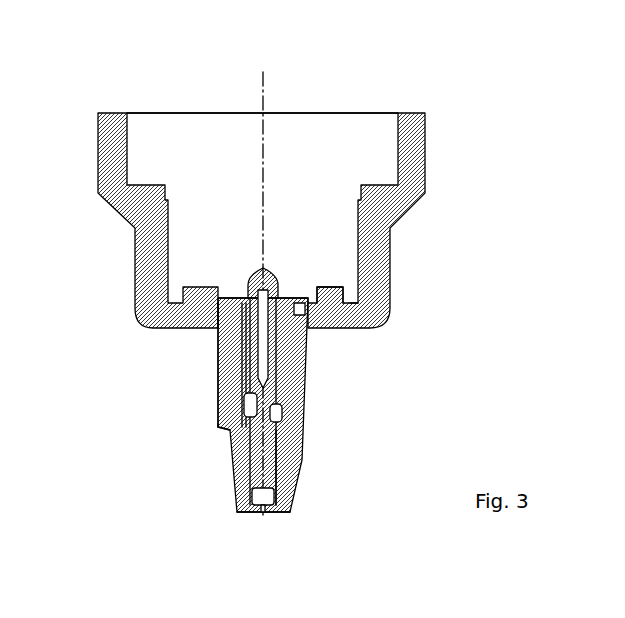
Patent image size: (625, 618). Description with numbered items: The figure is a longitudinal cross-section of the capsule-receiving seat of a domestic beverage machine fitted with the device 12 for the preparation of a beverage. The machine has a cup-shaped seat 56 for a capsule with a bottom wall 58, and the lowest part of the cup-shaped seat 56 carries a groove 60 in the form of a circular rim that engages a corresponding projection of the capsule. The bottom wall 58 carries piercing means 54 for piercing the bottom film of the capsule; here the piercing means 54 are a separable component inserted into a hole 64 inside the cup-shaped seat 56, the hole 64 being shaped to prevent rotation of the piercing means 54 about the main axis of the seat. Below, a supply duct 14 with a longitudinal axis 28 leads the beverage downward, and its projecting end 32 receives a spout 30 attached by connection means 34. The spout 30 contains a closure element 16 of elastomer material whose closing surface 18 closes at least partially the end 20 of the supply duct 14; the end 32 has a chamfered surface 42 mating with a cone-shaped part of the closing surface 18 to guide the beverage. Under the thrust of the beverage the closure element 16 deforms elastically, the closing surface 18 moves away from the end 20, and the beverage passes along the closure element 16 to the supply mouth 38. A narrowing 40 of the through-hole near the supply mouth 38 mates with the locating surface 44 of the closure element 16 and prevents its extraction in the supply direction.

The device for the preparation of a beverage 12 is at (210, 436).
The supply duct 14 is at (270, 360).
The closure element 16 is at (272, 435).
The closing surface 18 is at (244, 394).
The end of the supply duct 20 is at (282, 423).
The longitudinal axis 28 is at (263, 78).
The spout 30 is at (225, 378).
The end of the supply duct 32 is at (245, 364).
The connection means 34 is at (284, 350).
The supply mouth 38 is at (265, 512).
The narrowing 40 is at (245, 452).
The chamfered surface 42 is at (217, 424).
The locating surface 44 is at (252, 452).
The piercing means 54 is at (239, 287).
The cup-shaped seat 56 is at (362, 222).
The bottom wall 58 is at (324, 298).
The groove 60 is at (350, 303).
The hole 64 is at (290, 322).